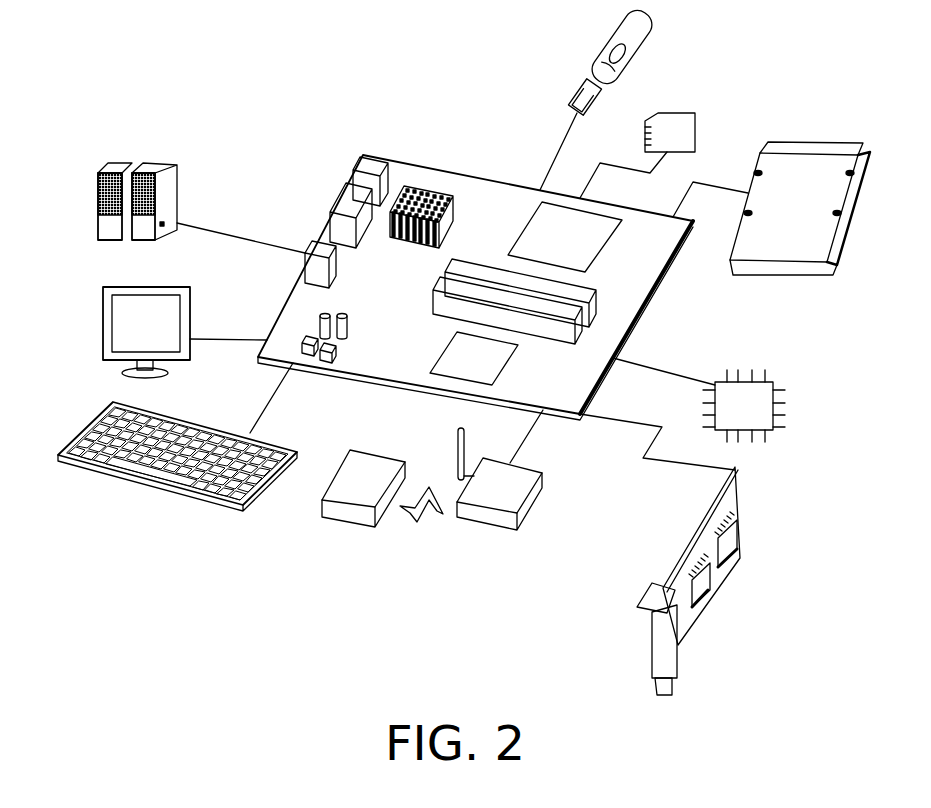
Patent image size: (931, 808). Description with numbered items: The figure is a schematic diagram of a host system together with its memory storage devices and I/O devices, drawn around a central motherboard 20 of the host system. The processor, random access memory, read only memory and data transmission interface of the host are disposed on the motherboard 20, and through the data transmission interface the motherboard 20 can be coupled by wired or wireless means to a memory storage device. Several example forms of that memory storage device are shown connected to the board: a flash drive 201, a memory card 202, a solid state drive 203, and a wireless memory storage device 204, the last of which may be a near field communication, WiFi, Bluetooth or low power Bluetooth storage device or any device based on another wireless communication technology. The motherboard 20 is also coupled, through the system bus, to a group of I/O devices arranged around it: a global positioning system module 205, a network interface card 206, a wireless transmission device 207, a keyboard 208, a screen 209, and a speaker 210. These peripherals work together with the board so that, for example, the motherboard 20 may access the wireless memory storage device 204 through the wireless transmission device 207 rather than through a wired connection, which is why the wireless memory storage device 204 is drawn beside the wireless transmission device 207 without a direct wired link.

The motherboard 20 is at (478, 197).
The flash drive 201 is at (602, 50).
The memory card 202 is at (695, 120).
The solid state drive 203 is at (817, 142).
The wireless memory storage device 204 is at (338, 467).
The global positioning system module 205 is at (772, 410).
The network interface card 206 is at (740, 525).
The wireless transmission device 207 is at (537, 513).
The keyboard 208 is at (180, 492).
The screen 209 is at (102, 342).
The speaker 210 is at (98, 225).